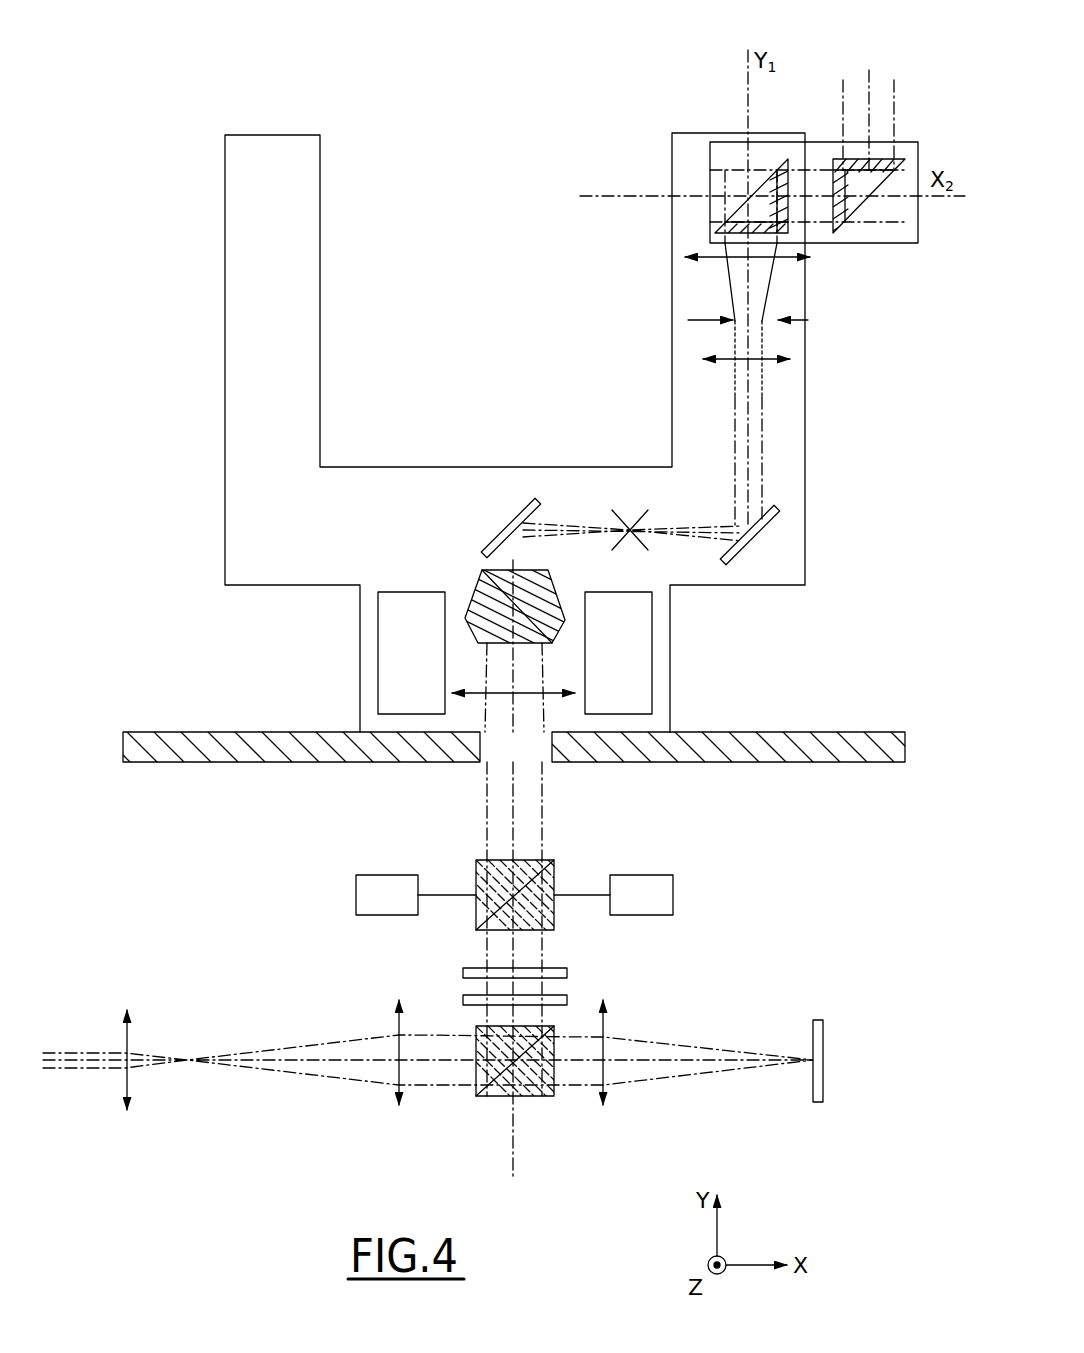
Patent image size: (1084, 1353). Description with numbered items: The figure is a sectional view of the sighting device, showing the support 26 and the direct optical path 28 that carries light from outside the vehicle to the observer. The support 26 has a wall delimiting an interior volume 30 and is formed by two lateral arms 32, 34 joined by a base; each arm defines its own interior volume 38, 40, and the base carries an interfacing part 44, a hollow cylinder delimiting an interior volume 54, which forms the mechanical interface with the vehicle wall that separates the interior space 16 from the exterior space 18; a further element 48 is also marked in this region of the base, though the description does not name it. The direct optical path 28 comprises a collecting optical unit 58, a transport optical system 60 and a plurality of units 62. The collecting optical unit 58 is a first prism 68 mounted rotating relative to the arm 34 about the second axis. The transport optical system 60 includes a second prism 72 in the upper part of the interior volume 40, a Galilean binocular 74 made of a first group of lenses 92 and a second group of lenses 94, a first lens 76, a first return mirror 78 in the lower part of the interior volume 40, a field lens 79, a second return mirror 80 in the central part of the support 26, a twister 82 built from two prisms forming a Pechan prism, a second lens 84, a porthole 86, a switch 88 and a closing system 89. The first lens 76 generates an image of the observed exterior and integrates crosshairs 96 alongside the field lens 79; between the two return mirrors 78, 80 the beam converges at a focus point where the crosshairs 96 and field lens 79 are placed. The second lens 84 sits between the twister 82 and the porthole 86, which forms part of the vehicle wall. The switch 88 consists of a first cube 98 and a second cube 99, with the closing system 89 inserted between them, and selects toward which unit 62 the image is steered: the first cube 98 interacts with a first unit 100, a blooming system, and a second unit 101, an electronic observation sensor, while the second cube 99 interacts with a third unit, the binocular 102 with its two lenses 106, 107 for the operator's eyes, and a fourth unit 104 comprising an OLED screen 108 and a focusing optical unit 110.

The interior space 16 is at (108, 877).
The exterior space 18 is at (108, 645).
The support 26 is at (463, 400).
The direct optical path 28 is at (913, 120).
The interior volume 30 is at (264, 540).
The lateral arm 32 is at (260, 170).
The lateral arm 34 is at (692, 156).
The interior volume 38 is at (270, 357).
The interior volume 40 is at (780, 448).
The interfacing part 44 is at (695, 623).
The inner housing wall 48 is at (342, 632).
The interior volume 54 is at (407, 665).
The collecting optical unit 58 is at (857, 118).
The transport optical system 60 is at (692, 340).
The units 62 is at (338, 907).
The first prism 68 is at (858, 205).
The second prism 72 is at (765, 203).
The Galilean binocular 74 is at (703, 289).
The first lens 76 is at (762, 362).
The first return mirror 78 is at (758, 545).
The field lens 79 is at (643, 495).
The second return mirror 80 is at (502, 530).
The twister 82 is at (482, 596).
The second lens 84 is at (520, 697).
The porthole 86 is at (500, 752).
The switch 88 is at (460, 1030).
The closing system 89 is at (592, 982).
The first group of lenses 92 is at (762, 262).
The second group of lenses 94 is at (762, 322).
The crosshairs 96 is at (630, 525).
The first cube 98 is at (530, 908).
The second cube 99 is at (528, 1092).
The first unit 100 is at (645, 888).
The second unit 101 is at (385, 888).
The binocular 102 is at (238, 1120).
The fourth unit 104 is at (705, 1020).
The lens 106 is at (125, 1063).
The lens 107 is at (399, 1075).
The screen 108 is at (823, 1080).
The focusing optical unit 110 is at (603, 1090).